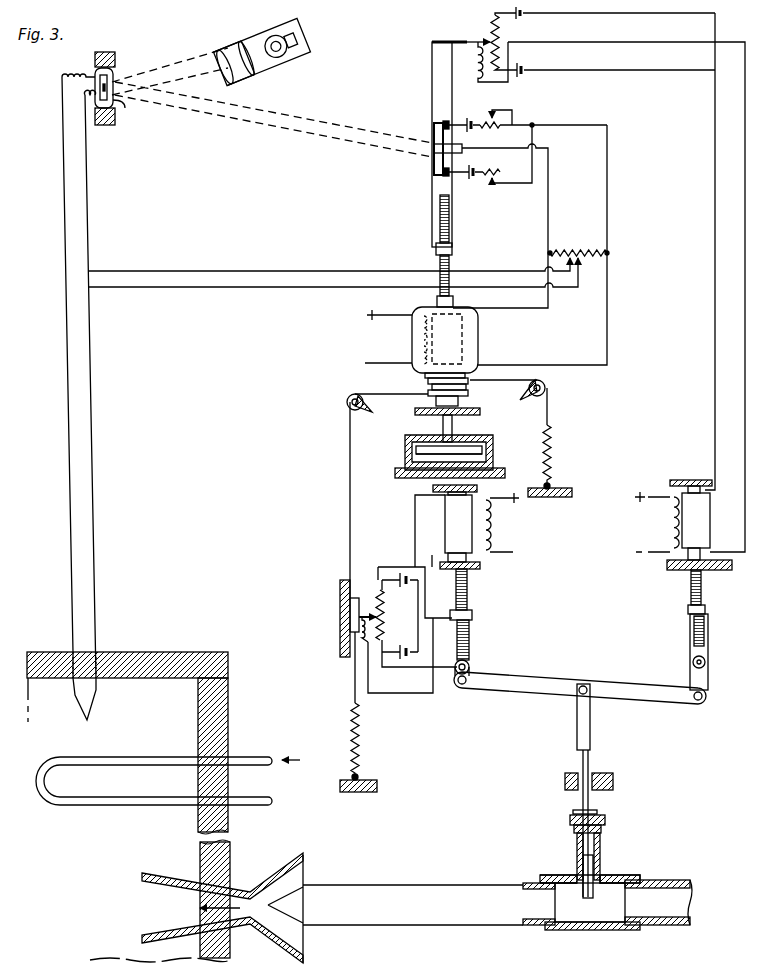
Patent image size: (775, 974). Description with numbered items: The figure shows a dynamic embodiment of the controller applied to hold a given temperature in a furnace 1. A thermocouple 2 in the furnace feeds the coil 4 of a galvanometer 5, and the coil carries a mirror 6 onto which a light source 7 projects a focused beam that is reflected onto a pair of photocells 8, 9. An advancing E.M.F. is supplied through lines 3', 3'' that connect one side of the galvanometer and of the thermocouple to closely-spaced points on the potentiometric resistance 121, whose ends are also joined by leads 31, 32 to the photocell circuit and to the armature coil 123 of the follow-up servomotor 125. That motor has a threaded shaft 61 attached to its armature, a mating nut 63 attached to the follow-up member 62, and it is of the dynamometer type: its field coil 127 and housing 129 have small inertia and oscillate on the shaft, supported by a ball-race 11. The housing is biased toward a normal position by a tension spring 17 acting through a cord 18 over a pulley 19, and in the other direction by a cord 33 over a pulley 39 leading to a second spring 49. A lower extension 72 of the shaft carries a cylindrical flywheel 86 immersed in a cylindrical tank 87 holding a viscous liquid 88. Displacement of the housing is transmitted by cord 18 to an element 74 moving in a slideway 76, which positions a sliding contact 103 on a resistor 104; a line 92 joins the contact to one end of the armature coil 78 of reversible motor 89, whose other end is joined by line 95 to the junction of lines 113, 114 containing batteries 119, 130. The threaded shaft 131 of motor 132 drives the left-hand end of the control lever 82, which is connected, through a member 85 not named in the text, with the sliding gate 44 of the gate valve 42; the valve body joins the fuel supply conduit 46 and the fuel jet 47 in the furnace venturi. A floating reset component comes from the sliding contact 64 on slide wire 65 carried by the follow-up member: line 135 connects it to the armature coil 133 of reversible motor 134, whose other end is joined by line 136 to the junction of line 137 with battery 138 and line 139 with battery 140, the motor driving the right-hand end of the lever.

The furnace 1 is at (228, 690).
The thermocouple 2 is at (96, 704).
The line 3' is at (329, 258).
The line 3'' is at (333, 286).
The coil 4 is at (96, 73).
The galvanometer 5 is at (126, 74).
The mirror 6 is at (125, 108).
The light source 7 is at (308, 70).
The photocell 8 is at (432, 125).
The photocell 9 is at (432, 160).
The ball-race 11 is at (462, 400).
The tension spring 17 is at (359, 734).
The cord 18 is at (350, 518).
The pulley 19 is at (347, 406).
The lead 31 is at (548, 224).
The lead 32 is at (610, 214).
The cord 33 is at (547, 408).
The pulley 39 is at (546, 386).
The gate valve 42 is at (608, 930).
The gate 44 is at (600, 866).
The fuel supply conduit 46 is at (670, 880).
The fuel jet 47 is at (431, 886).
The second spring 49 is at (553, 452).
The threaded shaft 61 is at (438, 256).
The follow-up member 62 is at (430, 68).
The mating nut 63 is at (438, 240).
The sliding contact 64 is at (478, 40).
The slide wire 65 is at (500, 32).
The lower extension 72 is at (442, 416).
The element 74 is at (350, 580).
The slideway 76 is at (345, 640).
The armature coil 78 is at (452, 510).
The control lever 82 is at (642, 690).
The link rod 85 is at (577, 724).
The cylindrical flywheel 86 is at (416, 456).
The cylindrical tank 87 is at (494, 446).
The liquid 88 is at (412, 448).
The reversible motor 89 is at (486, 562).
The line 92 is at (368, 678).
The line 95 is at (415, 540).
The sliding contact 103 is at (362, 592).
The resistor 104 is at (384, 618).
The line 113 is at (398, 575).
The line 114 is at (421, 578).
The battery 119 is at (401, 589).
The potentiometric resistance 121 is at (566, 250).
The armature coil 123 is at (462, 330).
The follow-up servomotor 125 is at (428, 302).
The field coil 127 is at (412, 336).
The housing 129 is at (478, 350).
The battery 130 is at (402, 662).
The shaft 131 is at (468, 592).
The motor 132 is at (496, 524).
The armature coil 133 is at (696, 522).
The reversible motor 134 is at (698, 478).
The line 135 is at (560, 44).
The line 136 is at (715, 408).
The line 137 is at (665, 72).
The battery 138 is at (528, 76).
The line 139 is at (715, 24).
The battery 140 is at (528, 14).